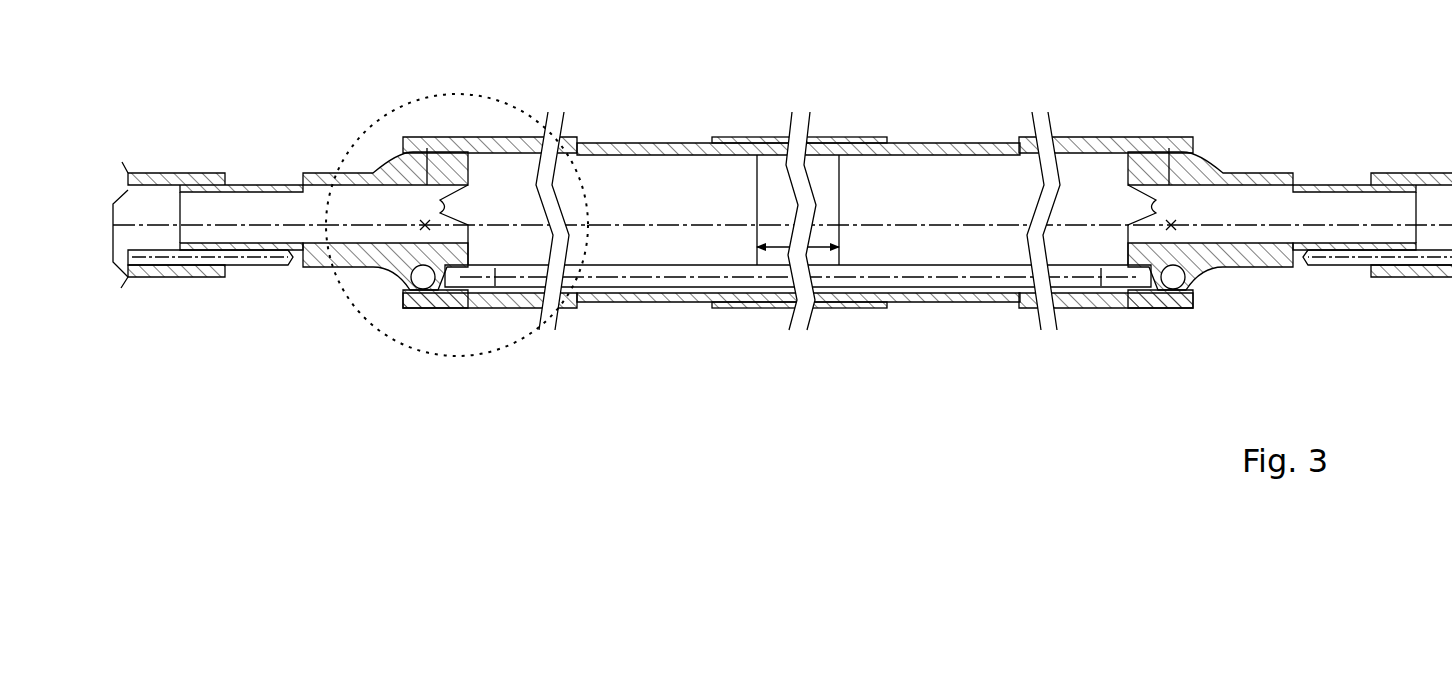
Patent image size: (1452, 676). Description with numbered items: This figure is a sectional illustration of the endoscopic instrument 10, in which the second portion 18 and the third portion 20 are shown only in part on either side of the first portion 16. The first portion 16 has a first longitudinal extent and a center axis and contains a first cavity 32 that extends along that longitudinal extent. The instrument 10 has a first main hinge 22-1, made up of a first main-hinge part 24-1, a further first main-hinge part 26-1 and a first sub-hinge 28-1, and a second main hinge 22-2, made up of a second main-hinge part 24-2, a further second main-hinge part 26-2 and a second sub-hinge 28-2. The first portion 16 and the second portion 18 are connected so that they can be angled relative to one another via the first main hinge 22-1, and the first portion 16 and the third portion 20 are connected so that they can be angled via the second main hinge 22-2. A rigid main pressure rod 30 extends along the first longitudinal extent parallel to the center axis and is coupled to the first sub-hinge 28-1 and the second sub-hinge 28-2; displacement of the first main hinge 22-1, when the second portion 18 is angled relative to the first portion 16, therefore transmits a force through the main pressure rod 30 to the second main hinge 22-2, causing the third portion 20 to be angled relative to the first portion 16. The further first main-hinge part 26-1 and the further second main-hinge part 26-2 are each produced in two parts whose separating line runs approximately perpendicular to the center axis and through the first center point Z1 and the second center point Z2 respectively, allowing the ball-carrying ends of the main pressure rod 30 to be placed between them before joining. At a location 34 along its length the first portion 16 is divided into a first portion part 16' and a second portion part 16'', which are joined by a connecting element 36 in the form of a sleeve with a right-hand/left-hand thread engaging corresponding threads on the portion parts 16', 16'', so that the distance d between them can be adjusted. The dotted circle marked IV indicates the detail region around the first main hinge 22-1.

The endoscopic instrument 10 is at (1136, 385).
The first portion 16 is at (798, 146).
The first portion part 16' is at (687, 189).
The second portion part 16'' is at (909, 189).
The second portion 18 is at (167, 126).
The third portion 20 is at (1421, 138).
The first main hinge 22-1 is at (461, 110).
The second main hinge 22-2 is at (1203, 113).
The first main-hinge part 24-1 is at (360, 140).
The second main-hinge part 24-2 is at (1203, 143).
The further first main-hinge part 26-1 is at (384, 294).
The further second main-hinge part 26-2 is at (1222, 301).
The first sub-hinge 28-1 is at (413, 300).
The second sub-hinge 28-2 is at (1182, 310).
The main pressure rod 30 is at (970, 287).
The first cavity 32 is at (832, 212).
The location 34 is at (770, 307).
The connecting element 36 is at (812, 138).
The first center point Z1 is at (427, 228).
The second center point Z2 is at (1169, 228).
The distance d is at (798, 299).
The detail region IV is at (522, 341).